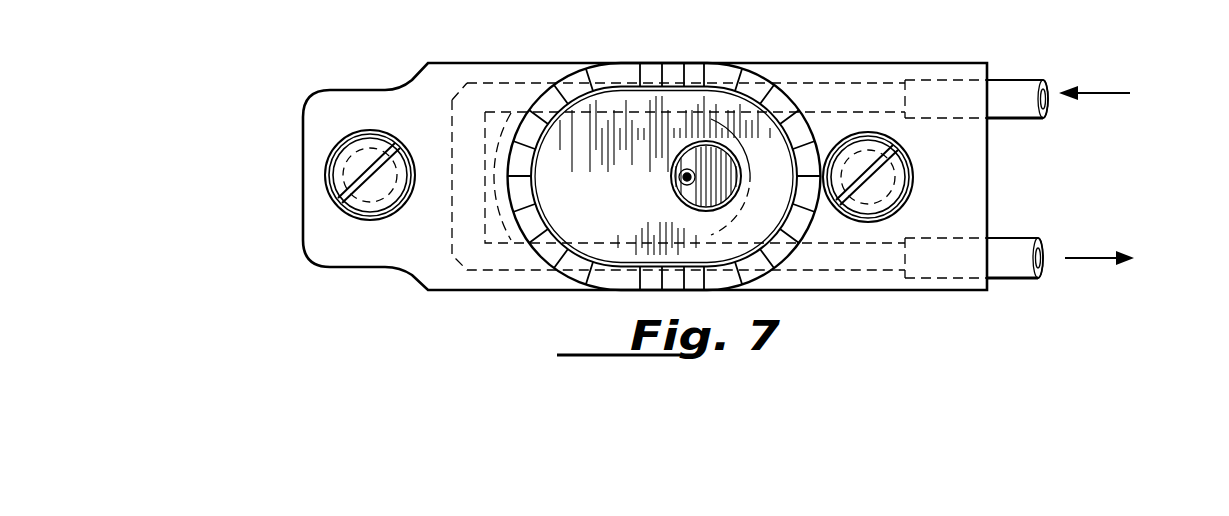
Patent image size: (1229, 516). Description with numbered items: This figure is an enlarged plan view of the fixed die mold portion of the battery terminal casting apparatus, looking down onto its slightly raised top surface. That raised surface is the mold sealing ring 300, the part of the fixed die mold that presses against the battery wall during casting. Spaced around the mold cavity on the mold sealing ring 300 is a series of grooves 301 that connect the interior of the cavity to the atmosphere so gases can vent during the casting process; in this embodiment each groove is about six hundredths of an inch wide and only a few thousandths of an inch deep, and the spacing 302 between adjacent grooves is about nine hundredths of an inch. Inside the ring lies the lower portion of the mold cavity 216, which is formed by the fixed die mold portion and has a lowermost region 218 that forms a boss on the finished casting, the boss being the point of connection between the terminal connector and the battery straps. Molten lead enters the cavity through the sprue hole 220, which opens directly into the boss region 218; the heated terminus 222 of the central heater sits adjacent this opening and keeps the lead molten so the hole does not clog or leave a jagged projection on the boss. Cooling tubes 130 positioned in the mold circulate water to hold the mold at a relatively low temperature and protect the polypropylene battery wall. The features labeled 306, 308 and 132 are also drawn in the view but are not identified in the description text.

The mold sealing ring 300 is at (745, 60).
The grooves 301 is at (683, 70).
The spacing between adjacent grooves 302 is at (668, 72).
The mold cavity 216 is at (568, 210).
The lowermost region of the mold cavity 218 is at (740, 193).
The sprue hole 220 is at (697, 189).
The terminus of the central heater 222 is at (684, 176).
The mounting screw 306 is at (383, 206).
The mounting screw 308 is at (882, 208).
The cooling tube 130 is at (998, 92).
The cooling block 132 is at (968, 181).